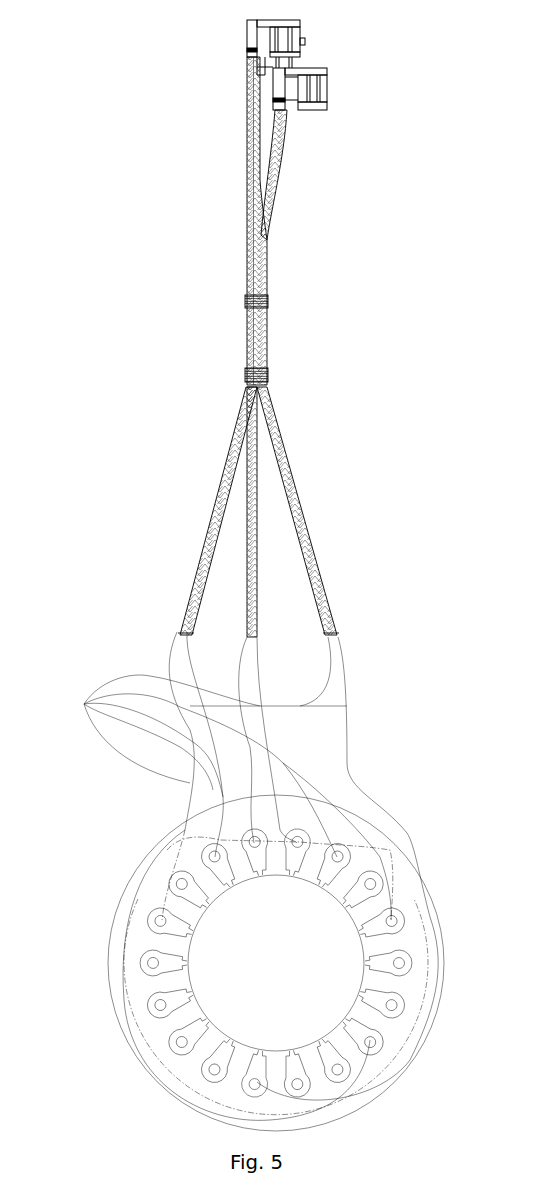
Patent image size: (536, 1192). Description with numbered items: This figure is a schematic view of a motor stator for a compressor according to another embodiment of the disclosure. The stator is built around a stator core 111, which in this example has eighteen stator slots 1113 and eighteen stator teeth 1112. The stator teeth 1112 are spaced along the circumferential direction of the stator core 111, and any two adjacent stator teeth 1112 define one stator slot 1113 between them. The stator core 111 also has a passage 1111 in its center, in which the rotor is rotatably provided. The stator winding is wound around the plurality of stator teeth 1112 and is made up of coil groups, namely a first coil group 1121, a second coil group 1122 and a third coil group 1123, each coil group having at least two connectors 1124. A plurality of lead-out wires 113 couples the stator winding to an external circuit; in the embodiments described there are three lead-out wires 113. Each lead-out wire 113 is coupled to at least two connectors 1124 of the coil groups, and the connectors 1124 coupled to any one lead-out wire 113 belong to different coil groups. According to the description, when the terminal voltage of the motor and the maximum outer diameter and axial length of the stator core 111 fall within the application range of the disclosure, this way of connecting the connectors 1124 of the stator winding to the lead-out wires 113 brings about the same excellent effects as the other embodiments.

The stator core 111 is at (132, 903).
The passage 1111 is at (330, 1005).
The stator teeth 1112 is at (187, 1010).
The stator slot 1113 is at (180, 993).
The first coil group 1121 is at (167, 850).
The second coil group 1122 is at (338, 853).
The third coil group 1123 is at (380, 857).
The connectors 1124 is at (231, 876).
The lead-out wire 113 is at (258, 322).